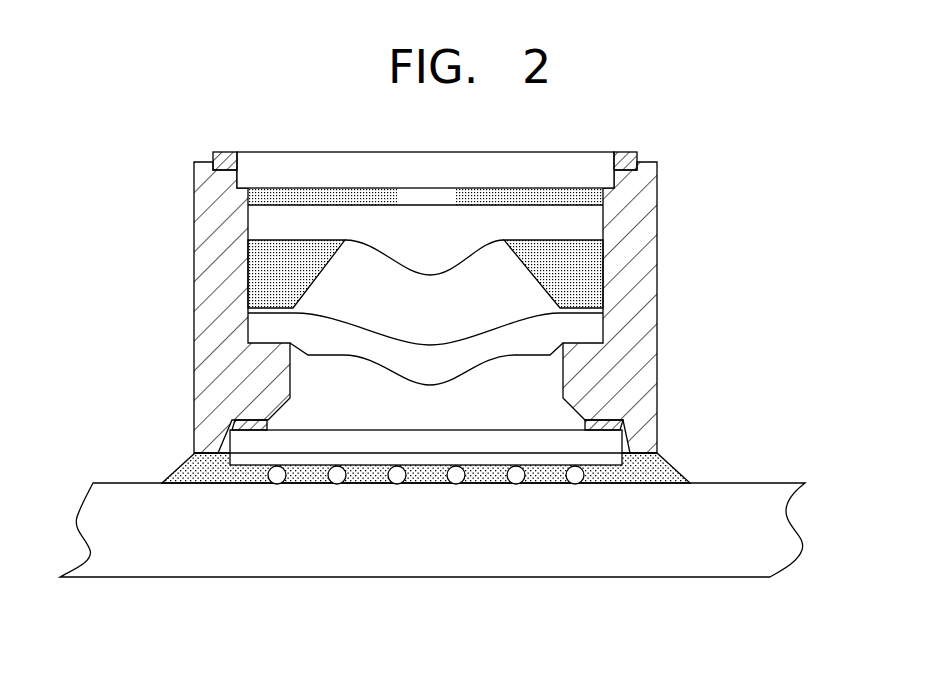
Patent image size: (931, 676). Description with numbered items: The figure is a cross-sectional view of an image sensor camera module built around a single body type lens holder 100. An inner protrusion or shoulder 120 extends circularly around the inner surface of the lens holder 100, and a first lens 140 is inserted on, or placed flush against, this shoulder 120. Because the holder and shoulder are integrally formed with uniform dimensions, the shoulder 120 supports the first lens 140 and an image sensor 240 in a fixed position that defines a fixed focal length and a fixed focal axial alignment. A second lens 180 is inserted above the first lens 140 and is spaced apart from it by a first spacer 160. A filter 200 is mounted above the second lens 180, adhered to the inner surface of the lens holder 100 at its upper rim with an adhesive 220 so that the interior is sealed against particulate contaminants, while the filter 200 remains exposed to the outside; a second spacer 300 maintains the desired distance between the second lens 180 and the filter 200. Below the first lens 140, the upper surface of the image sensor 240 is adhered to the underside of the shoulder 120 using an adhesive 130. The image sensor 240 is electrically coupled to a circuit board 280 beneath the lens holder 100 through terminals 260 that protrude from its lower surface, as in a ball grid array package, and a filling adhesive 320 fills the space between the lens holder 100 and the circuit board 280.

The lens holder 100 is at (605, 174).
The shoulder 120 is at (578, 380).
The adhesive 130 is at (612, 428).
The first lens 140 is at (590, 327).
The first spacer 160 is at (600, 284).
The second lens 180 is at (603, 231).
The filter 200 is at (598, 197).
The adhesive 220 is at (630, 165).
The image sensor 240 is at (626, 445).
The terminals 260 is at (397, 484).
The circuit board 280 is at (522, 565).
The second spacer 300 is at (590, 223).
The filling adhesive 320 is at (632, 471).